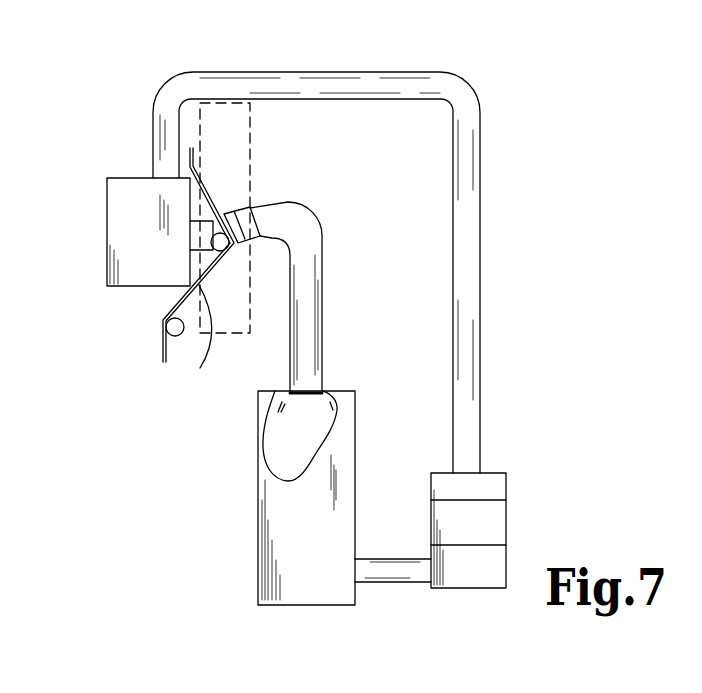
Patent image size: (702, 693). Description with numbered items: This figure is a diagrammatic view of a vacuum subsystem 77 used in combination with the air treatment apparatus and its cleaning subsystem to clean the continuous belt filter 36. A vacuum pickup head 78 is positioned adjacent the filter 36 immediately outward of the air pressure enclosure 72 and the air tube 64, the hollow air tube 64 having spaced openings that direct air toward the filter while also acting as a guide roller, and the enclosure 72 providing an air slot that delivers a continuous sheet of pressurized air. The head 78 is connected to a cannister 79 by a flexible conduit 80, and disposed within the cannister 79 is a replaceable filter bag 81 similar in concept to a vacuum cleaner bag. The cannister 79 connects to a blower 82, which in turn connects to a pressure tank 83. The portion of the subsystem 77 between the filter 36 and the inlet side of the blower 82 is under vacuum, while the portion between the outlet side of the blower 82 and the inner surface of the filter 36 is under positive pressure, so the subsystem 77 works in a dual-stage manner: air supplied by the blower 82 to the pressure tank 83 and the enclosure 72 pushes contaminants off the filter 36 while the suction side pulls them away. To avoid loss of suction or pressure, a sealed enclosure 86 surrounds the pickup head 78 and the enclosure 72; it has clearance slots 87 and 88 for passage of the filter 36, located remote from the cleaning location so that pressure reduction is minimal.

The vacuum subsystem 77 is at (508, 360).
The pressure tank 83 is at (118, 195).
The air pressure enclosure 72 is at (197, 233).
The air tube 64 is at (210, 240).
The clearance slot 87 is at (202, 183).
The continuous belt filter 36 is at (181, 311).
The clearance slot 88 is at (200, 339).
The sealed enclosure 86 is at (215, 103).
The vacuum pickup head 78 is at (288, 203).
The flexible conduit 80 is at (322, 309).
The cannister 79 is at (258, 417).
The replaceable filter bag 81 is at (280, 458).
The blower 82 is at (493, 522).